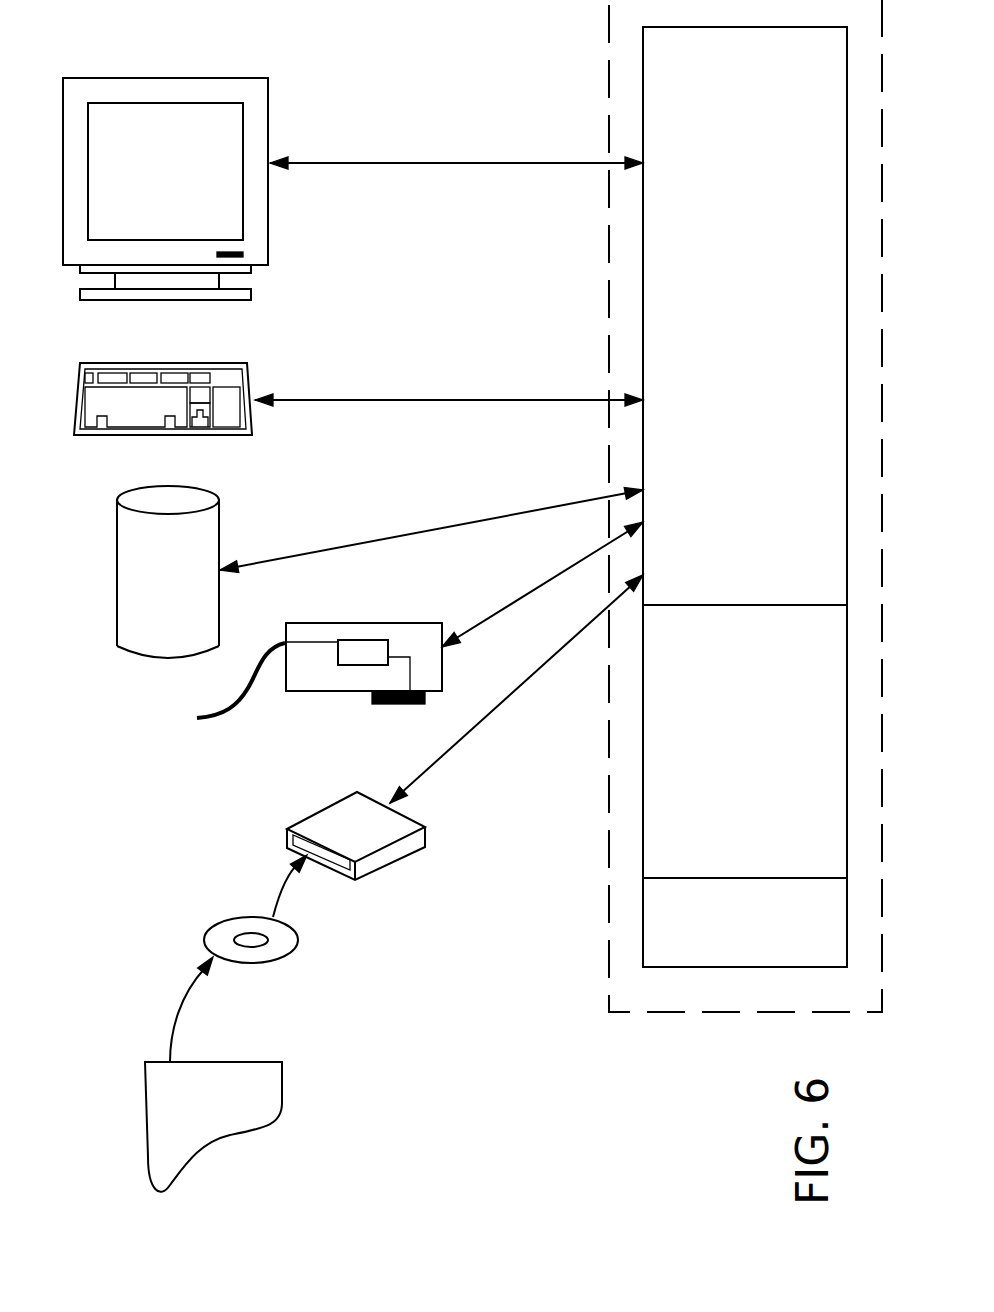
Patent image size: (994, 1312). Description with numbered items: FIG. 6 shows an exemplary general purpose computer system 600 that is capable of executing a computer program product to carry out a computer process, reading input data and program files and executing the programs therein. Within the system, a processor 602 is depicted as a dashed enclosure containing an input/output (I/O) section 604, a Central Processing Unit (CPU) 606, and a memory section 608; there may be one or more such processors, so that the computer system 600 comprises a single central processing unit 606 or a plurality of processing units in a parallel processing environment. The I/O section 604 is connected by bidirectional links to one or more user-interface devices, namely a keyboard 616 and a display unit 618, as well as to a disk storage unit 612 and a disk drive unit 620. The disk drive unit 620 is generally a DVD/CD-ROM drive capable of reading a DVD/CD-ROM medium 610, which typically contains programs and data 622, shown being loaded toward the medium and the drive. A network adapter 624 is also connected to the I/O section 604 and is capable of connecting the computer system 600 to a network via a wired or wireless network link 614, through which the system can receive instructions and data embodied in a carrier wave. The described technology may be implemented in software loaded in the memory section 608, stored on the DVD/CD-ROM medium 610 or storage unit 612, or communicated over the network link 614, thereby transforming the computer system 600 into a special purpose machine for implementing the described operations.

The general purpose computer system 600 is at (574, 1112).
The processor 602 is at (609, 60).
The input/output (I/O) section 604 is at (727, 341).
The Central Processing Unit (CPU) 606 is at (728, 767).
The memory section 608 is at (728, 948).
The DVD/CD-ROM medium 610 is at (220, 918).
The storage unit 612 is at (117, 520).
The network link 614 is at (220, 722).
The keyboard 616 is at (120, 363).
The display unit 618 is at (128, 78).
The disk drive unit 620 is at (337, 827).
The programs and data 622 is at (282, 1083).
The network adapter 624 is at (338, 693).